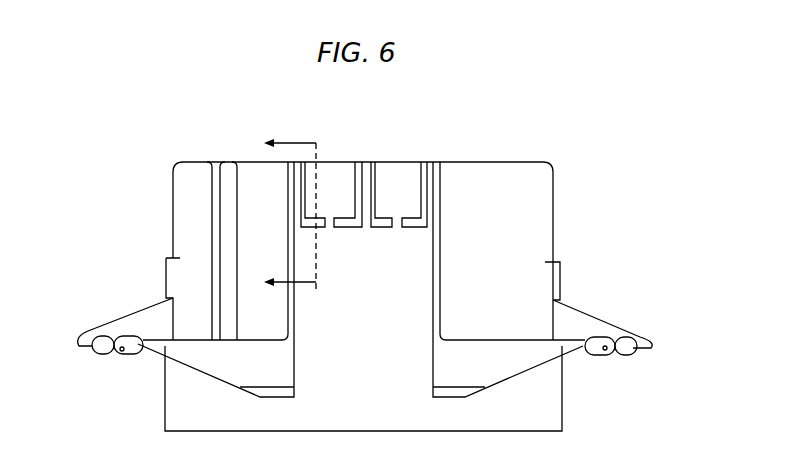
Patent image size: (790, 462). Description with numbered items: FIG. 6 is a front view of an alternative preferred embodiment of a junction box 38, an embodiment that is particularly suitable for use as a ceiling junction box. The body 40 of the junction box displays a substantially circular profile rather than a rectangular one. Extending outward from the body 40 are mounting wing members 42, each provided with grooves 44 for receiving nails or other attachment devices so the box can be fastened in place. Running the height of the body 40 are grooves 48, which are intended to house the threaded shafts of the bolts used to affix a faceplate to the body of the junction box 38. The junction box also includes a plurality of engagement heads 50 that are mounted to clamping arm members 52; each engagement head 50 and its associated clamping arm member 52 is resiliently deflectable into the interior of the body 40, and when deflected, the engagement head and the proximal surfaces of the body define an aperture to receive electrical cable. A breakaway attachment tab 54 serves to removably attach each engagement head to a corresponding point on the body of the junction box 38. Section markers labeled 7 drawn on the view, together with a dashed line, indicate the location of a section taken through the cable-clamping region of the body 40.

The junction box 38 is at (586, 282).
The body 40 is at (493, 253).
The mounting wing members 42 is at (74, 357).
The grooves 44 is at (140, 348).
The grooves 48 is at (230, 166).
The engagement heads 50 is at (402, 223).
The clamping arm members 52 is at (398, 182).
The breakaway attachment tab 54 is at (422, 225).
The section line 7 is at (284, 211).